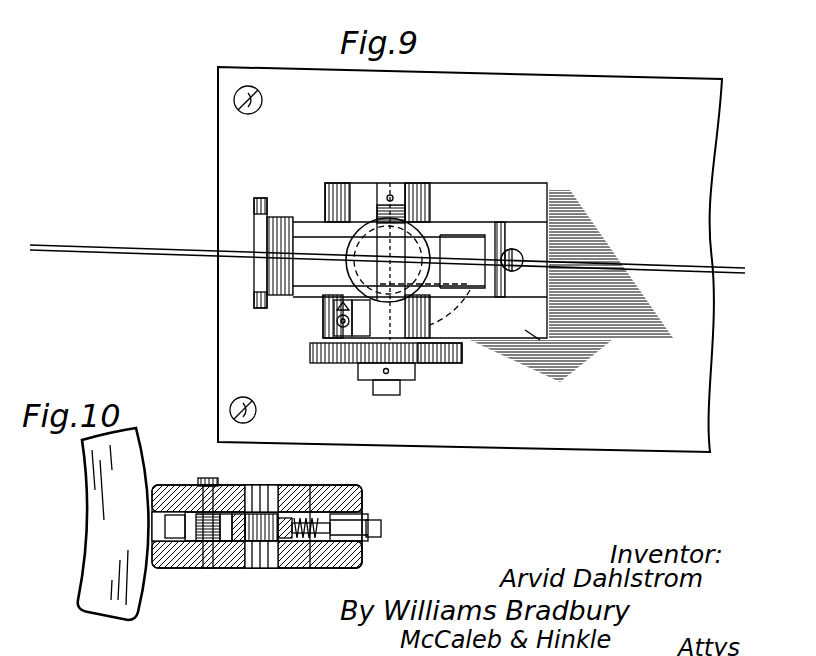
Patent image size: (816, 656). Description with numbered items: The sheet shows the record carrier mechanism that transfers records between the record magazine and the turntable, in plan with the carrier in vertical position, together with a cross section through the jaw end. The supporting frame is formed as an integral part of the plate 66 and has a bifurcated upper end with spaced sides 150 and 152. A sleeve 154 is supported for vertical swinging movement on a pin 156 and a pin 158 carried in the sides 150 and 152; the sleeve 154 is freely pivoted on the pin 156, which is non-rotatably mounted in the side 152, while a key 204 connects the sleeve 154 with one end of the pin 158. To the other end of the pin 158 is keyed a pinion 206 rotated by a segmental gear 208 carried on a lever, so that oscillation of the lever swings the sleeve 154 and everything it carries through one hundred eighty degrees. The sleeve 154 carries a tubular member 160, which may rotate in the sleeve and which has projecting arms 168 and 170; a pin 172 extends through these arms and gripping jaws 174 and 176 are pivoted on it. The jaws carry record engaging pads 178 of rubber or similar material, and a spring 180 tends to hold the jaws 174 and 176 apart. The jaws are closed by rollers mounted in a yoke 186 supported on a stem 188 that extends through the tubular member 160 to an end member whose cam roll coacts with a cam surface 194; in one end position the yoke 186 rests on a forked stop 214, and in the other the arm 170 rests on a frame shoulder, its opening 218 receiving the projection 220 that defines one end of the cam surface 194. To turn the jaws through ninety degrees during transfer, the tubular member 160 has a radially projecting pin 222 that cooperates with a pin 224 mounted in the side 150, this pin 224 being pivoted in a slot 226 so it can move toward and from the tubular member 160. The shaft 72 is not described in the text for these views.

In FIG. 9, the plate 66 is at (247, 80).
In FIG. 9, the shaft 72 is at (103, 246).
In FIG. 9, the side 150 is at (530, 322).
In FIG. 9, the side 152 is at (510, 186).
In FIG. 9, the sleeve 154 is at (420, 200).
In FIG. 10, the sleeve 154 is at (350, 490).
In FIG. 9, the pin 156 is at (382, 192).
In FIG. 9, the pin 158 is at (376, 370).
In FIG. 10, the tubular member 160 is at (368, 520).
In FIG. 9, the projecting arm 168 is at (452, 200).
In FIG. 10, the projecting arm 168 is at (232, 490).
In FIG. 10, the projecting arm 170 is at (226, 568).
In FIG. 10, the pin 172 is at (210, 568).
In FIG. 9, the gripping jaw 174 is at (290, 278).
In FIG. 10, the gripping jaw 174 is at (190, 506).
In FIG. 9, the gripping jaw 176 is at (333, 186).
In FIG. 10, the gripping jaw 176 is at (143, 530).
In FIG. 10, the record engaging pad 178 is at (95, 488).
In FIG. 10, the spring 180 is at (200, 567).
In FIG. 10, the yoke 186 is at (270, 566).
In FIG. 10, the stem 188 is at (381, 530).
In FIG. 9, the cam surface 194 is at (298, 218).
In FIG. 9, the key 204 is at (455, 292).
In FIG. 9, the pinion 206 is at (420, 365).
In FIG. 9, the segmental gear 208 is at (447, 364).
In FIG. 9, the forked stop 214 is at (258, 232).
In FIG. 10, the opening 218 is at (266, 492).
In FIG. 9, the projection 220 is at (524, 258).
In FIG. 9, the radially projecting pin 222 is at (336, 308).
In FIG. 9, the cooperating pin 224 is at (336, 322).
In FIG. 9, the slot 226 is at (345, 335).